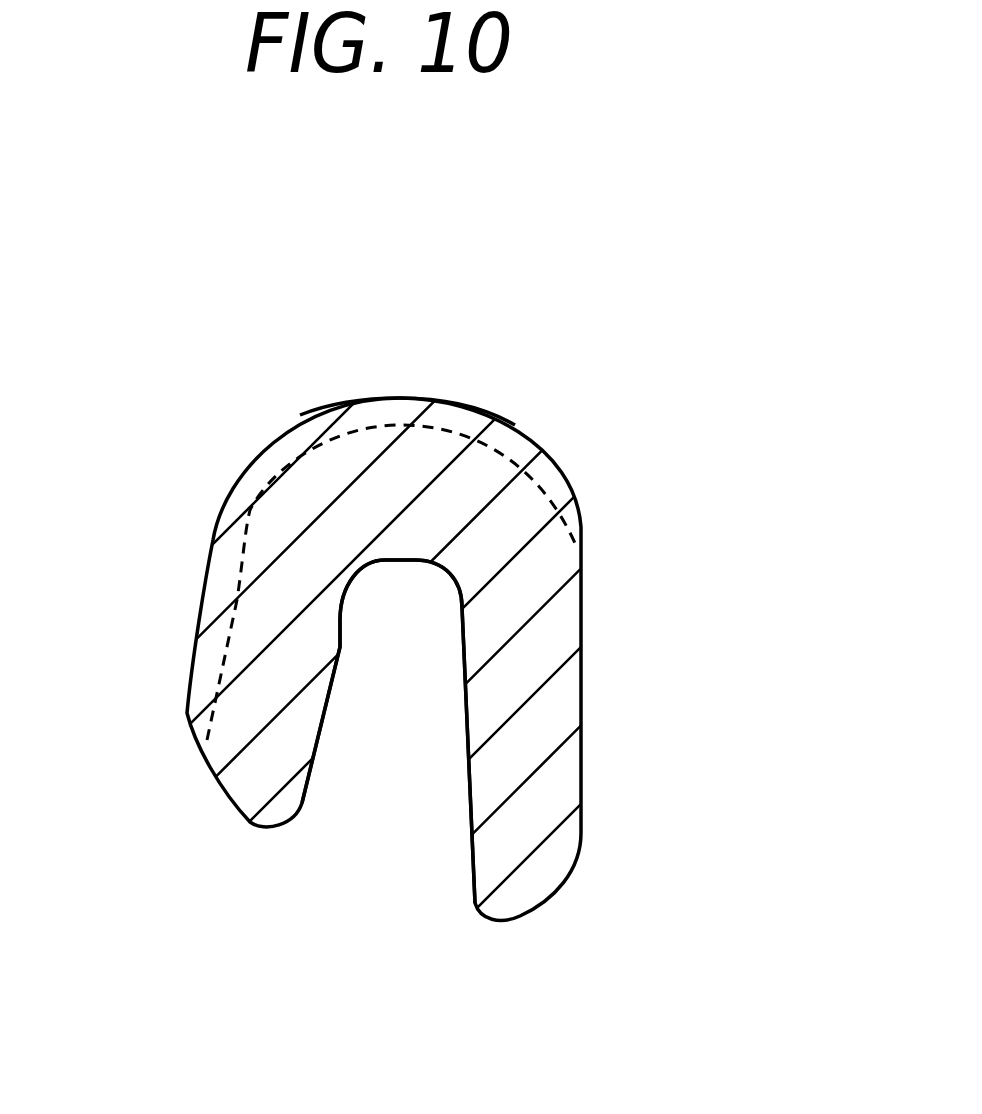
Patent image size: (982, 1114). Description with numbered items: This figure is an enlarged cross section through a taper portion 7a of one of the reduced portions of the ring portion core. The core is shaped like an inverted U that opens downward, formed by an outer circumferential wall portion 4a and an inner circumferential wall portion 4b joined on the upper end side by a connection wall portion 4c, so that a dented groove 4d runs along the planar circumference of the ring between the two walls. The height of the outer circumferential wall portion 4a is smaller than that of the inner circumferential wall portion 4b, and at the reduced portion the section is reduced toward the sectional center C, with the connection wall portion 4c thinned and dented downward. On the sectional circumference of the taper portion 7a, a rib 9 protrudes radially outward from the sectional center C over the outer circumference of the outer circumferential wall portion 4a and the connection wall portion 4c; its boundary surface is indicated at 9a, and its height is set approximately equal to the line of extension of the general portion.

The taper portion 7a is at (623, 630).
The outer circumferential wall portion 4a is at (253, 772).
The inner circumferential wall portion 4b is at (537, 735).
The connection wall portion 4c is at (357, 513).
The dented groove 4d is at (340, 647).
The rib 9 is at (523, 443).
The outer surface of coating layer 9a is at (415, 400).
The sectional center C is at (403, 667).